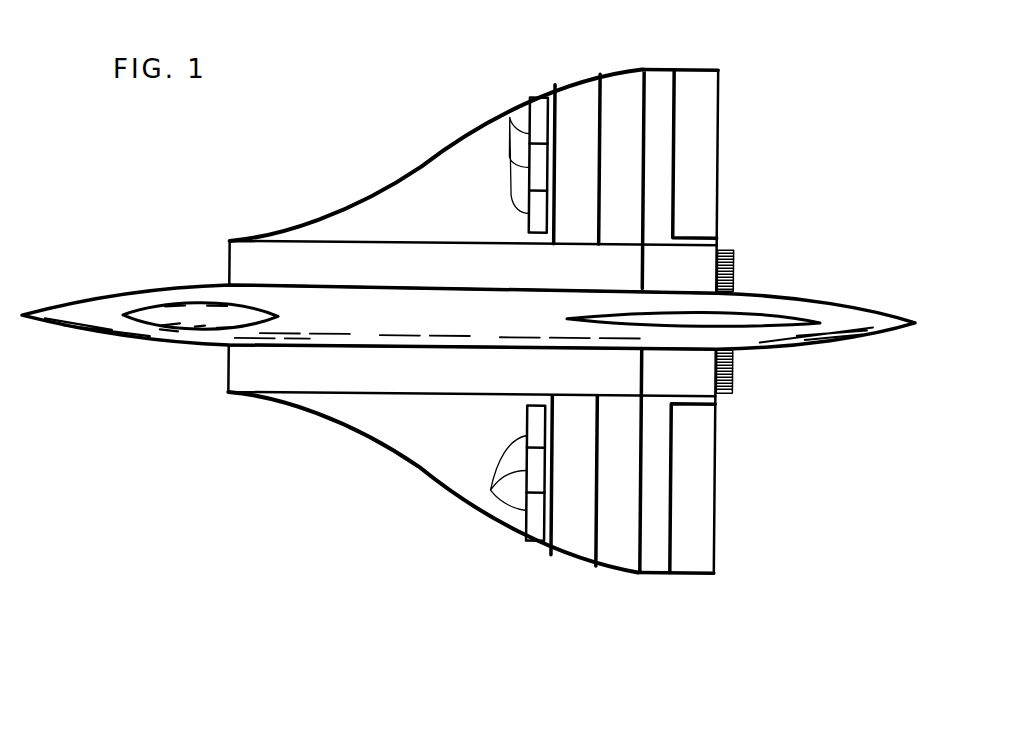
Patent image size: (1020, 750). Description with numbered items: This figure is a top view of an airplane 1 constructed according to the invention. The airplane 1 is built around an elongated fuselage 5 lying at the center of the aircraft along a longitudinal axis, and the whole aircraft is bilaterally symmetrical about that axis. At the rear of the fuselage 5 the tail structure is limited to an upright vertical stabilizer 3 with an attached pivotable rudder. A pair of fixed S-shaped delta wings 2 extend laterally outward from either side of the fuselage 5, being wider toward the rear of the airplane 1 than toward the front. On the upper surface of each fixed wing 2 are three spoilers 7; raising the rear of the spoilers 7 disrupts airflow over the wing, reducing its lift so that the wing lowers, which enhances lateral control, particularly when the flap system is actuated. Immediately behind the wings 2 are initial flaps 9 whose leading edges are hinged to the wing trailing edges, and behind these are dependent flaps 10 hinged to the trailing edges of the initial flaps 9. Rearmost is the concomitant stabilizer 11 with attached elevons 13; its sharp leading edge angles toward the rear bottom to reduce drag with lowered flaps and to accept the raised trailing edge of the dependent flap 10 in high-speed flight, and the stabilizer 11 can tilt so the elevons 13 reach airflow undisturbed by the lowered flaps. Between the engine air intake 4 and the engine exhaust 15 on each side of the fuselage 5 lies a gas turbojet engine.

The airplane 1 is at (231, 242).
The fixed S-shaped delta wings 2 is at (478, 129).
The vertical stabilizer 3 is at (764, 316).
The engine air intake 4 is at (228, 363).
The fuselage 5 is at (113, 341).
The spoilers 7 is at (508, 117).
The initial flaps 9 is at (577, 78).
The dependent flaps 10 is at (612, 70).
The concomitant stabilizer 11 is at (658, 68).
The elevons 13 is at (717, 115).
The engine exhaust 15 is at (742, 383).